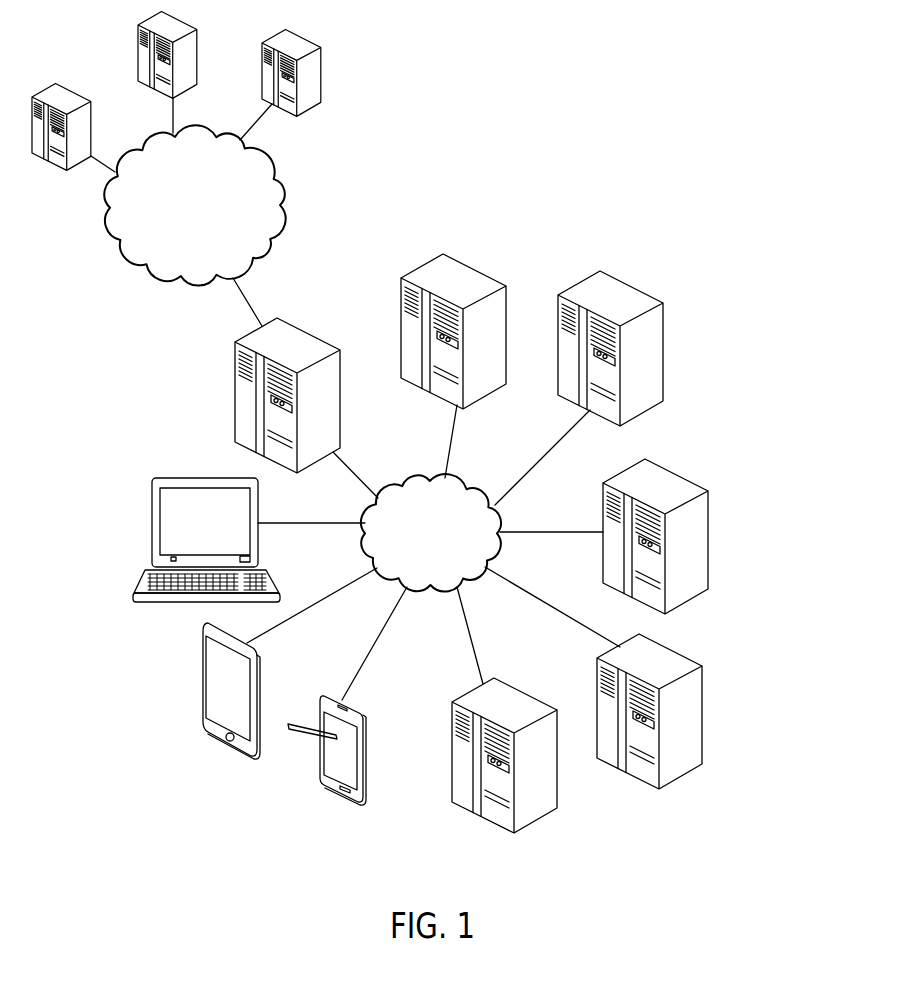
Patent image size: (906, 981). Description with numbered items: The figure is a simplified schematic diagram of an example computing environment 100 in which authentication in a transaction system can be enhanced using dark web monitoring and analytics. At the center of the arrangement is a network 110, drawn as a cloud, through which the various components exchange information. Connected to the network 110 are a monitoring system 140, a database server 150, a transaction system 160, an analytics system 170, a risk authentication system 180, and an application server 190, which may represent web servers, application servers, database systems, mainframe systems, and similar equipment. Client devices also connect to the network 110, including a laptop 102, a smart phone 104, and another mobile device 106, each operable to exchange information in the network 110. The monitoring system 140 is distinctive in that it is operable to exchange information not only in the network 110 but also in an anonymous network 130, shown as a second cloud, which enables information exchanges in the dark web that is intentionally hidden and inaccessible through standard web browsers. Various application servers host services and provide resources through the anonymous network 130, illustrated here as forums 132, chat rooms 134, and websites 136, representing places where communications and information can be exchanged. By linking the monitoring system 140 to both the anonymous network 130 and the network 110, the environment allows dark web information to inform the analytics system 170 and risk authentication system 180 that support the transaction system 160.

The computing environment 100 is at (535, 44).
The laptop 102 is at (152, 492).
The smart phone 104 is at (258, 652).
The mobile device 106 is at (365, 718).
The network 110 is at (414, 562).
The anonymous network 130 is at (176, 259).
The forums 132 is at (55, 85).
The chat rooms 134 is at (198, 27).
The websites 136 is at (319, 50).
The monitoring system 140 is at (235, 342).
The database server 150 is at (444, 254).
The transaction system 160 is at (663, 304).
The analytics system 170 is at (709, 492).
The risk authentication system 180 is at (672, 652).
The application server 190 is at (557, 808).